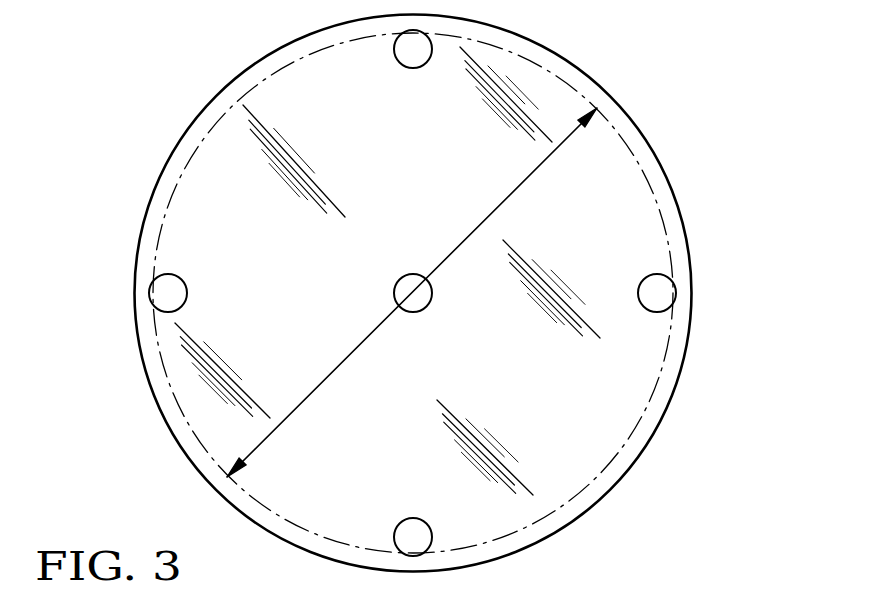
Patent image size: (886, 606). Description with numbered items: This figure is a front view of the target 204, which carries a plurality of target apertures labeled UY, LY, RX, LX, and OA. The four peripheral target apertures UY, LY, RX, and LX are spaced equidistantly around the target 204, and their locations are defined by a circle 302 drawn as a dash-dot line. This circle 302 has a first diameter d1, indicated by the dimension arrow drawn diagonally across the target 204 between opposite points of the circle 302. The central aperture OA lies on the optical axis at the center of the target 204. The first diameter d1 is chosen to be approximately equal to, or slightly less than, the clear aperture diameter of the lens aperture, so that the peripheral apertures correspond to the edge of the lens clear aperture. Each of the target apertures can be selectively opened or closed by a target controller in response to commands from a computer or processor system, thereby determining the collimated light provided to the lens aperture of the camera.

The target 204 is at (217, 100).
The circle 302 is at (675, 392).
The first diameter d1 is at (567, 140).